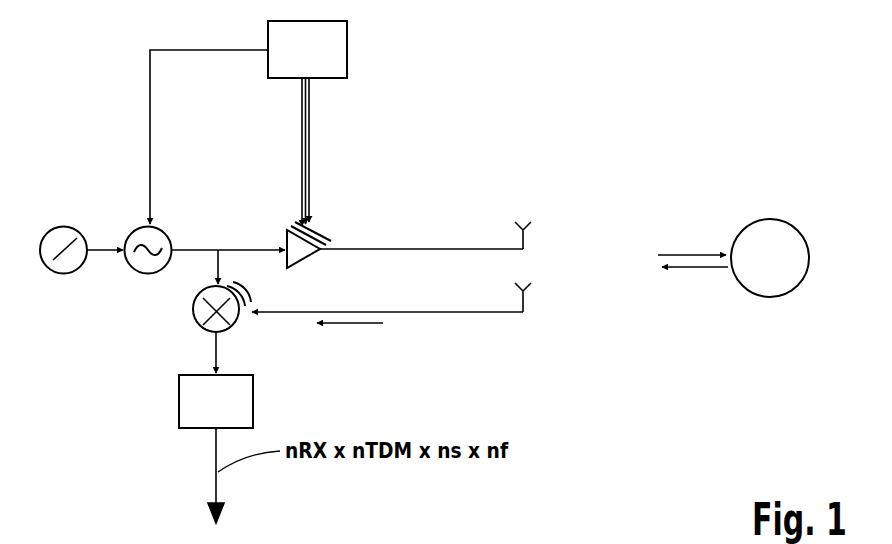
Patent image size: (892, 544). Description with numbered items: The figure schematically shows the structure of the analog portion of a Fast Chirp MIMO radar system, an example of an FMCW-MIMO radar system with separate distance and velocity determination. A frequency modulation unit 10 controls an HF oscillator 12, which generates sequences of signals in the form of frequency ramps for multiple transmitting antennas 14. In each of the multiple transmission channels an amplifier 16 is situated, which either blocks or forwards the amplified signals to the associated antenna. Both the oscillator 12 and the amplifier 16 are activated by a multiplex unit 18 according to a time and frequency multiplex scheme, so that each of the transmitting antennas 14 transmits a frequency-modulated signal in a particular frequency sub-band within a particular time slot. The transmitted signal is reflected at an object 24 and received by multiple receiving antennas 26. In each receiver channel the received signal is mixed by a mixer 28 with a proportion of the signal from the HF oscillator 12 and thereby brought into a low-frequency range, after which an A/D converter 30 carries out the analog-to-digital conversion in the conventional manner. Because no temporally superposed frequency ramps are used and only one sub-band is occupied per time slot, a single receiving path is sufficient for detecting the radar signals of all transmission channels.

The frequency modulation unit 10 is at (78, 230).
The HF oscillator 12 is at (163, 230).
The transmitting antennas 14 is at (527, 227).
The amplifier 16 is at (290, 230).
The multiplex unit 18 is at (348, 39).
The object 24 is at (788, 222).
The receiving antennas 26 is at (527, 298).
The mixer 28 is at (193, 311).
The A/D converter 30 is at (179, 392).